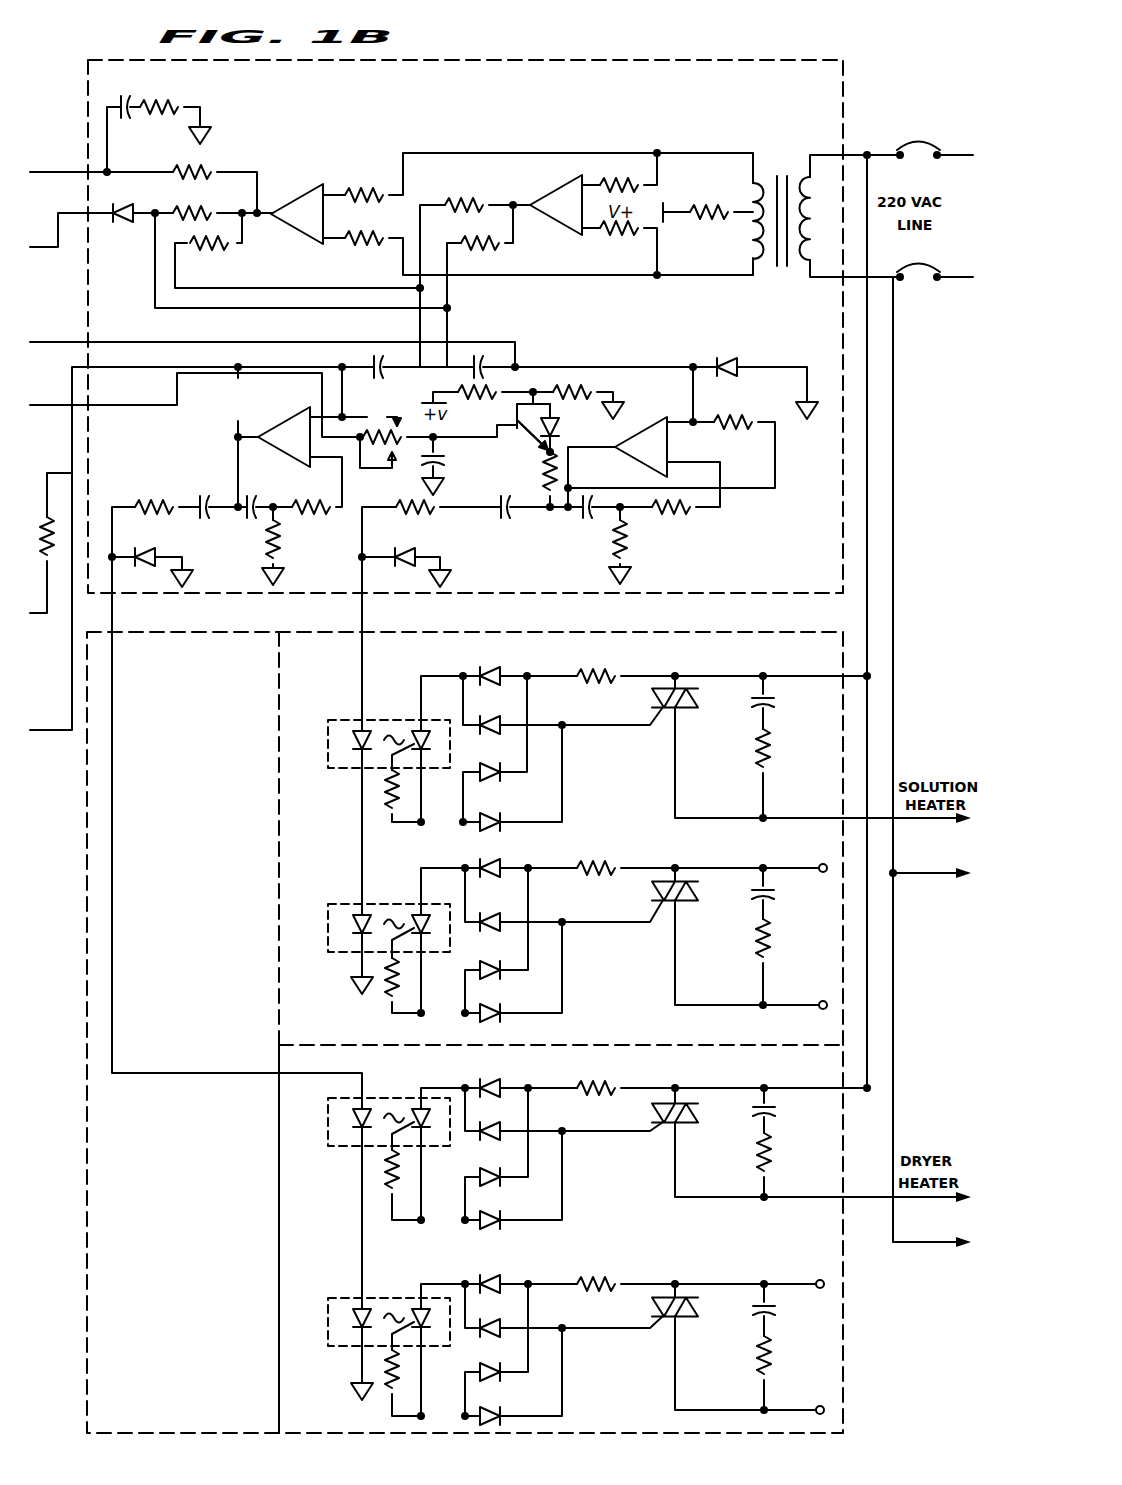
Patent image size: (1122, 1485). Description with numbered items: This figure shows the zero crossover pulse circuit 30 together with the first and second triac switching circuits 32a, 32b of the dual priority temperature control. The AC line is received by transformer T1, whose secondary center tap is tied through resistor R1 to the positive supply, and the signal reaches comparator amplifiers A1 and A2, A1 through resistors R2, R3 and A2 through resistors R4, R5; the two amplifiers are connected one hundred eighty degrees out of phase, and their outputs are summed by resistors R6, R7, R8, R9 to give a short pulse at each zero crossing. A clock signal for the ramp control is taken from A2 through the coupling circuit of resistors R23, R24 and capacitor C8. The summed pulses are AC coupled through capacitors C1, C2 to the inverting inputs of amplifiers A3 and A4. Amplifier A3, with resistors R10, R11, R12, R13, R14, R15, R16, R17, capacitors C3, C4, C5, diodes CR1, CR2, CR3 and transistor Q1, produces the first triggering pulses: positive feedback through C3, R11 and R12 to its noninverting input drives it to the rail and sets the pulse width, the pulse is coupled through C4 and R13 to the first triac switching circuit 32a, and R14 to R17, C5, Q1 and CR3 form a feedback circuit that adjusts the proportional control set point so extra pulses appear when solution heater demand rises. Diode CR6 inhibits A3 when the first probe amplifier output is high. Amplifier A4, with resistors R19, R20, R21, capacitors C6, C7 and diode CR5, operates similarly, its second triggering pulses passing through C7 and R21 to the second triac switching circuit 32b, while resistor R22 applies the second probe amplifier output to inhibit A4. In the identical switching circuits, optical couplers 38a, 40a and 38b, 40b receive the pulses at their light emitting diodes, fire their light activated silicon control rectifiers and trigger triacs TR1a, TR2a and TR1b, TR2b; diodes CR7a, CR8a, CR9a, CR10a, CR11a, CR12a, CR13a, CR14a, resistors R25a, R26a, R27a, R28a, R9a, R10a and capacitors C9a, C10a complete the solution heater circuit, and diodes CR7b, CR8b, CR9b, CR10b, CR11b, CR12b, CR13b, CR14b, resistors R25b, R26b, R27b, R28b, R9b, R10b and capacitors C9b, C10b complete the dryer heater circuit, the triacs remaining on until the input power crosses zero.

The zero cross-over pulse circuit 30 is at (843, 90).
The first triac switching circuit 32a is at (279, 948).
The second triac switching circuit 32b is at (279, 1305).
The optical coupler 38a is at (328, 734).
The optical coupler 40a is at (327, 915).
The optical coupler 38b is at (323, 1125).
The optical coupler 40b is at (322, 1312).
The capacitor C8 is at (120, 97).
The resistor R24 is at (165, 100).
The resistor R23 is at (200, 165).
The resistor R8 is at (222, 206).
The resistor R9 is at (232, 255).
The diode CR6 is at (124, 225).
The comparator amplifier A2 is at (300, 193).
The resistor R4 is at (360, 190).
The resistor R5 is at (365, 248).
The resistor R6 is at (475, 188).
The resistor R7 is at (470, 248).
The comparator amplifier A1 is at (565, 185).
The resistor R2 is at (624, 178).
The resistor R3 is at (636, 238).
The resistor R1 is at (712, 207).
The transformer T1 is at (781, 268).
The capacitor C2 is at (385, 355).
The capacitor C1 is at (478, 356).
The resistor R15 is at (582, 386).
The diode CR1 is at (727, 358).
The resistor R14 is at (462, 390).
The transistor Q1 is at (514, 420).
The diode CR3 is at (570, 426).
The amplifier A3 is at (655, 415).
The resistor R10 is at (736, 418).
The amplifier A4 is at (288, 415).
The resistor R16 is at (403, 458).
The capacitor C5 is at (443, 463).
The resistor R17 is at (545, 480).
The resistor R21 is at (162, 502).
The capacitor C7 is at (210, 502).
The capacitor C6 is at (262, 502).
The resistor R19 is at (318, 502).
The resistor R20 is at (279, 535).
The diode CR5 is at (148, 550).
The resistor R13 is at (403, 516).
The diode CR2 is at (410, 570).
The capacitor C4 is at (497, 519).
The capacitor C3 is at (577, 519).
The resistor R11 is at (680, 516).
The resistor R12 is at (630, 546).
The resistor R22 is at (40, 560).
The resistor R25a is at (390, 800).
The diode CR7a is at (490, 664).
The diode CR8a is at (489, 715).
The diode CR9a is at (489, 762).
The diode CR10a is at (500, 813).
The resistor R27a is at (602, 662).
The triac TR1a is at (680, 712).
The capacitor C9a is at (773, 702).
The resistor R9a is at (770, 745).
The resistor R26a is at (392, 992).
The diode CR11a is at (503, 859).
The diode CR12a is at (498, 912).
The diode CR13a is at (495, 960).
The diode CR14a is at (498, 1004).
The resistor R28a is at (602, 855).
The triac TR2a is at (680, 905).
The capacitor C10a is at (773, 894).
The resistor R10a is at (770, 938).
The resistor R25b is at (390, 1192).
The diode CR7b is at (490, 1076).
The diode CR8b is at (489, 1121).
The diode CR9b is at (489, 1167).
The diode CR10b is at (500, 1211).
The resistor R27b is at (602, 1074).
The triac TR1b is at (680, 1127).
The capacitor C9b is at (774, 1110).
The resistor R9b is at (771, 1140).
The resistor R26b is at (392, 1392).
The diode CR11b is at (503, 1271).
The diode CR12b is at (498, 1318).
The diode CR13b is at (495, 1362).
The diode CR14b is at (498, 1407).
The resistor R28b is at (602, 1270).
The triac TR2b is at (680, 1320).
The capacitor C10b is at (774, 1308).
The resistor R10b is at (771, 1345).